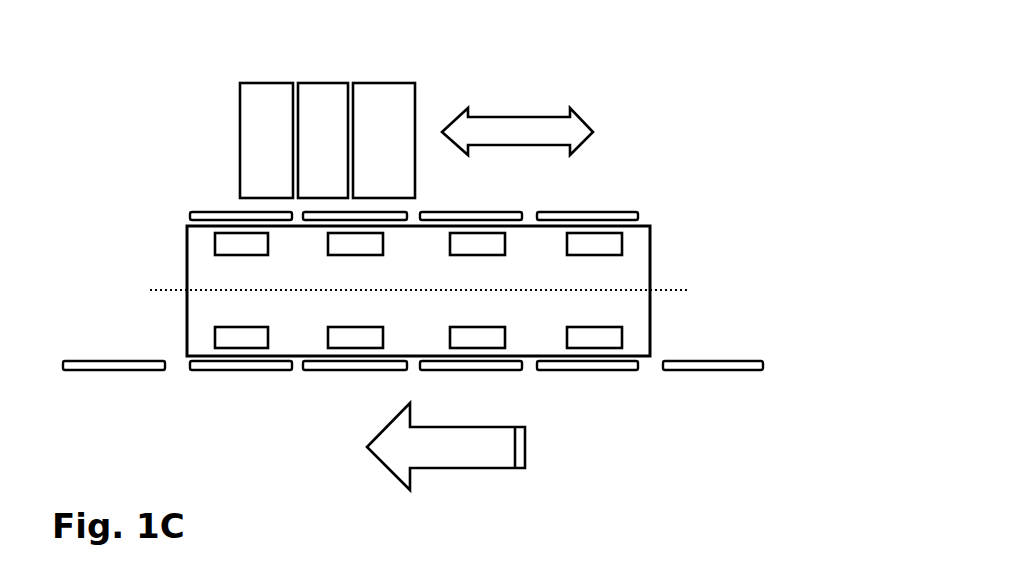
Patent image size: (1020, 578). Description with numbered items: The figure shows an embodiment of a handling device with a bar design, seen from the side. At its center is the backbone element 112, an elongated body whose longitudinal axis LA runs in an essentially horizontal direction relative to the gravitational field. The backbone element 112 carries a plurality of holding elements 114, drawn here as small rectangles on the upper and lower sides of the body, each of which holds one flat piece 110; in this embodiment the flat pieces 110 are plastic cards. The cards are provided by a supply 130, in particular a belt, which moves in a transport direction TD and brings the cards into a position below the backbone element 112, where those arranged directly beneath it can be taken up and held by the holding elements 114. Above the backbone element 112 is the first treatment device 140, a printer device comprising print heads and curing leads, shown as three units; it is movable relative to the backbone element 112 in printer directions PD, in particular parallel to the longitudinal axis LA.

The flat piece 110 is at (510, 210).
The backbone element 112 is at (650, 241).
The holding element 114 is at (622, 243).
The supply 130 is at (780, 372).
The first treatment device 140 is at (403, 68).
The printer direction PD is at (543, 117).
The transport direction TD is at (525, 433).
The longitudinal axis LA is at (157, 291).